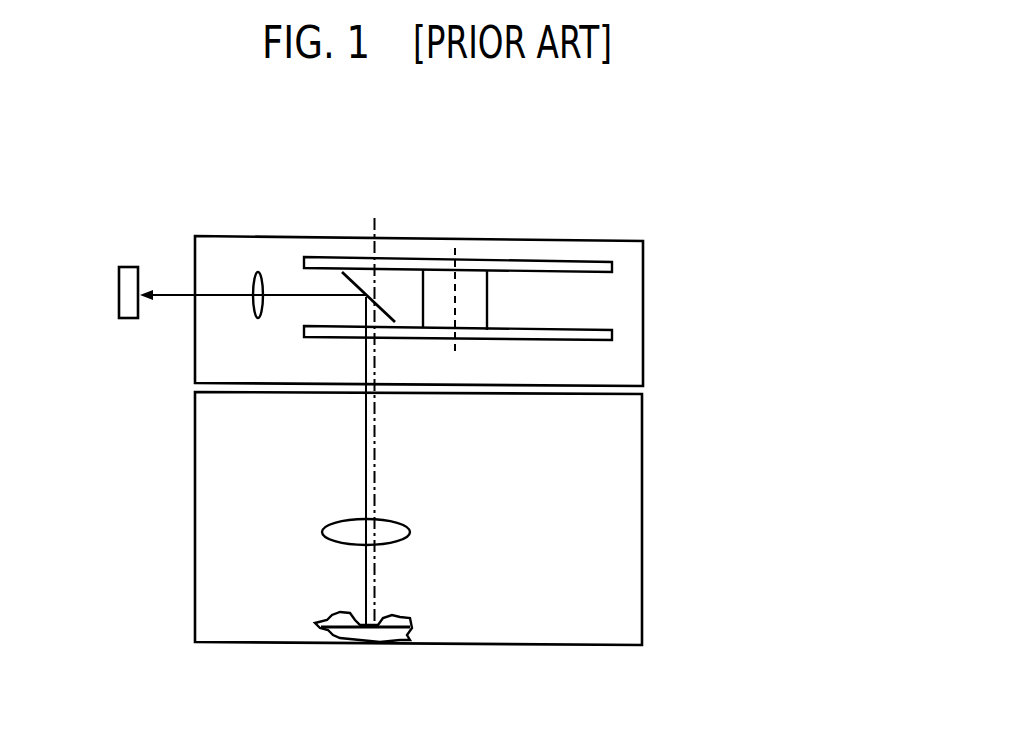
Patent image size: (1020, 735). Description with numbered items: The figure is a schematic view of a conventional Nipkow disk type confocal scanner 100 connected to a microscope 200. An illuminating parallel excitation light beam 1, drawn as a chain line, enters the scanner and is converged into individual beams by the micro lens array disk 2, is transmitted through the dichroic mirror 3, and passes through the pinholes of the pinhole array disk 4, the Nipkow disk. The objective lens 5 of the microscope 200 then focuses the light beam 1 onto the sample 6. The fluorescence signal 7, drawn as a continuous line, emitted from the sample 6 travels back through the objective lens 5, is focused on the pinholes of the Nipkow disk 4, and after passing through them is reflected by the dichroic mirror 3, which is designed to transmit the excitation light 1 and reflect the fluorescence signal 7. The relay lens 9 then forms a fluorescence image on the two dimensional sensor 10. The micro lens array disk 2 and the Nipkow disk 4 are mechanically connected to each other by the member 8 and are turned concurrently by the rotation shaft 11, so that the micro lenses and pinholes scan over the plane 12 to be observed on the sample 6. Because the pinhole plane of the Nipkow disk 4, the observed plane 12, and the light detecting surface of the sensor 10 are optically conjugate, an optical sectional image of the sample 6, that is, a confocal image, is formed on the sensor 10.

The excitation light beam 1 is at (375, 218).
The micro lens array disk 2 is at (587, 266).
The dichroic mirror 3 is at (358, 280).
The pinhole array disk 4 is at (594, 334).
The objective lens 5 is at (380, 528).
The sample 6 is at (380, 614).
The fluorescence signal 7 is at (367, 442).
The member 8 is at (472, 275).
The relay lens 9 is at (257, 273).
The two dimensional sensor 10 is at (128, 267).
The rotation shaft 11 is at (455, 347).
The plane 12 is at (333, 611).
The confocal scanner 100 is at (644, 377).
The microscope 200 is at (642, 538).